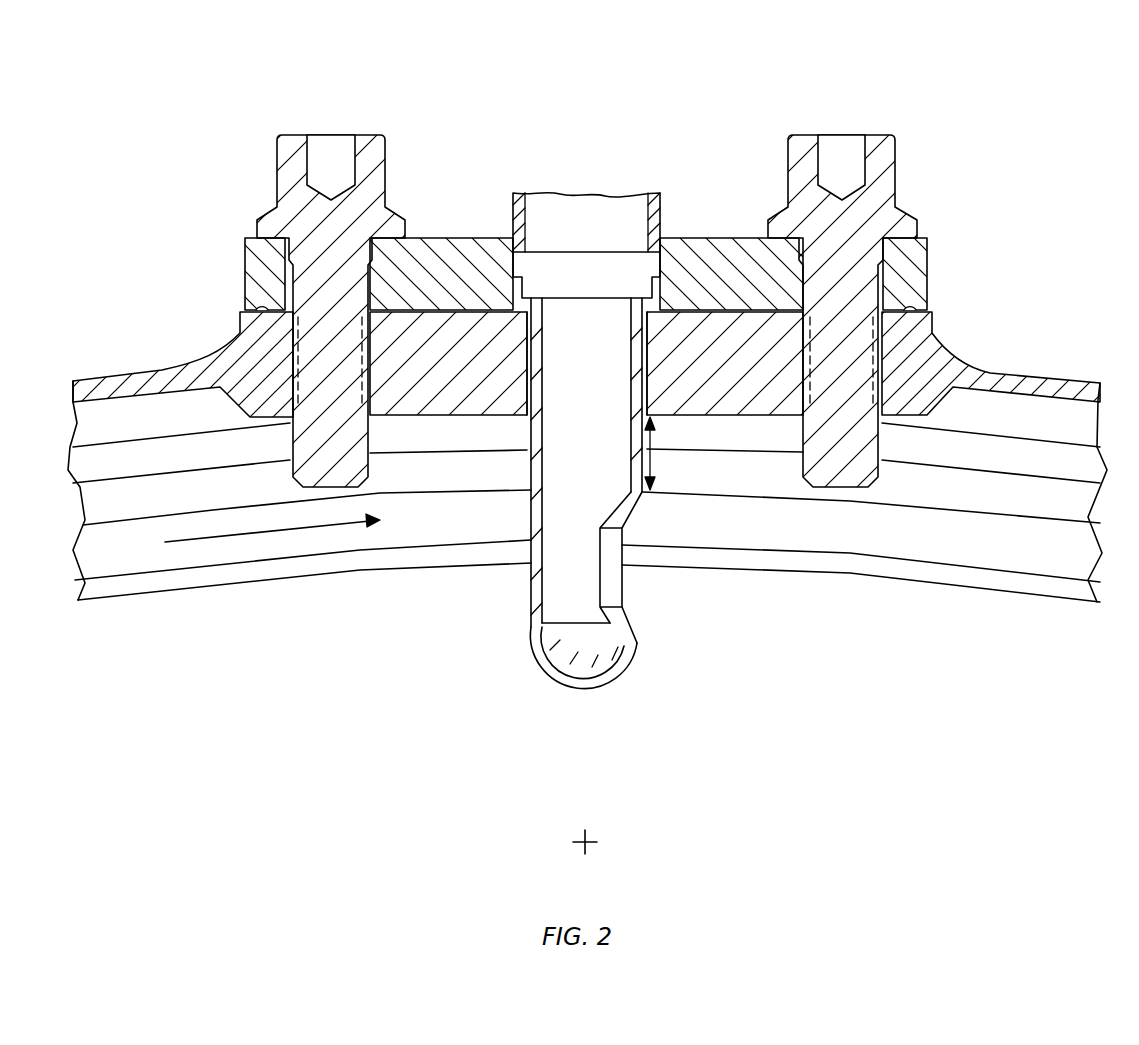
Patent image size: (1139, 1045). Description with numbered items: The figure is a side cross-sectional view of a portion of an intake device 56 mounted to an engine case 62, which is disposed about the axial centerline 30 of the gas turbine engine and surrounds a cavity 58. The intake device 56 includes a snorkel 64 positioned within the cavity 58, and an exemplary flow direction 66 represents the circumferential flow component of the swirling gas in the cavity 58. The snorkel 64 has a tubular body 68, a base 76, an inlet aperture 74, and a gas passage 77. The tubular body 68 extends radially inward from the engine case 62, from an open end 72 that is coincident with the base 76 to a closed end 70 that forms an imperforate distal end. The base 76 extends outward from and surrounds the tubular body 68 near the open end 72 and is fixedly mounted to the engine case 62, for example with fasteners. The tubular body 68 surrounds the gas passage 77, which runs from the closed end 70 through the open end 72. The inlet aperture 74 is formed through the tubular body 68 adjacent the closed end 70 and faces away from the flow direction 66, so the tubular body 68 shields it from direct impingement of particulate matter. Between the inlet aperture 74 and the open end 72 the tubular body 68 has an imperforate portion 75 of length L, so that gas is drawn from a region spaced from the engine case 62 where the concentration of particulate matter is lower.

The axial centerline 30 is at (592, 838).
The intake device 56 is at (766, 93).
The cavity 58 is at (838, 688).
The engine case 62 is at (1000, 372).
The snorkel 64 is at (512, 462).
The flow direction 66 is at (243, 540).
The tubular body 68 is at (532, 507).
The closed end 70 is at (585, 695).
The open end 72 is at (587, 312).
The inlet aperture 74 is at (622, 583).
The imperforate portion 75 is at (640, 387).
The base 76 is at (452, 248).
The gas passage 77 is at (604, 392).